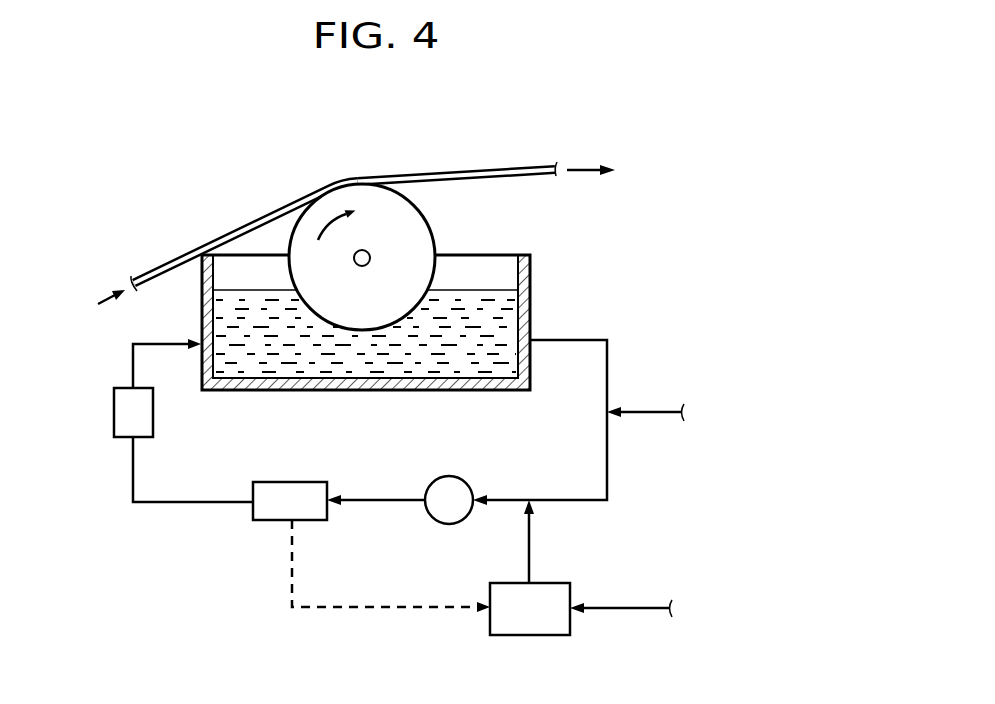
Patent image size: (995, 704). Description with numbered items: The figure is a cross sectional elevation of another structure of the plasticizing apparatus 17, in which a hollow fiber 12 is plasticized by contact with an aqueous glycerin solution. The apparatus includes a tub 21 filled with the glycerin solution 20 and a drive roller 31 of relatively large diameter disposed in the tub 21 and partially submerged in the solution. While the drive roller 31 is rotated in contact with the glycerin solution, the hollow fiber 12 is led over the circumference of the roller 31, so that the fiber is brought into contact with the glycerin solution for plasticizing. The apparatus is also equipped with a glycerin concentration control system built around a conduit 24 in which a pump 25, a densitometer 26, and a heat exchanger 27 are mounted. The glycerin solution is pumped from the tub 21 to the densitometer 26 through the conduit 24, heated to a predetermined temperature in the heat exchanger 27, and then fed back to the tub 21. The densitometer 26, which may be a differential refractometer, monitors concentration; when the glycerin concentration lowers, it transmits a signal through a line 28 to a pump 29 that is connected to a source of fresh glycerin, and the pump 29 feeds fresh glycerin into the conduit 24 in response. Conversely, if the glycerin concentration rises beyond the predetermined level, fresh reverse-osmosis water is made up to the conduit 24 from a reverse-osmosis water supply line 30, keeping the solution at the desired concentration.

The hollow fiber 12 is at (488, 170).
The plasticizing apparatus 17 is at (205, 186).
The drive roller 31 is at (370, 190).
The tub 21 is at (532, 318).
The coating liquid 20 is at (382, 370).
The heat exchanger 27 is at (120, 414).
The densitometer 26 is at (296, 490).
The pump 25 is at (452, 485).
The conduit 24 is at (568, 497).
The reverse-osmosis water supply line 30 is at (664, 418).
The pump 29 is at (543, 627).
The line 28 is at (290, 572).